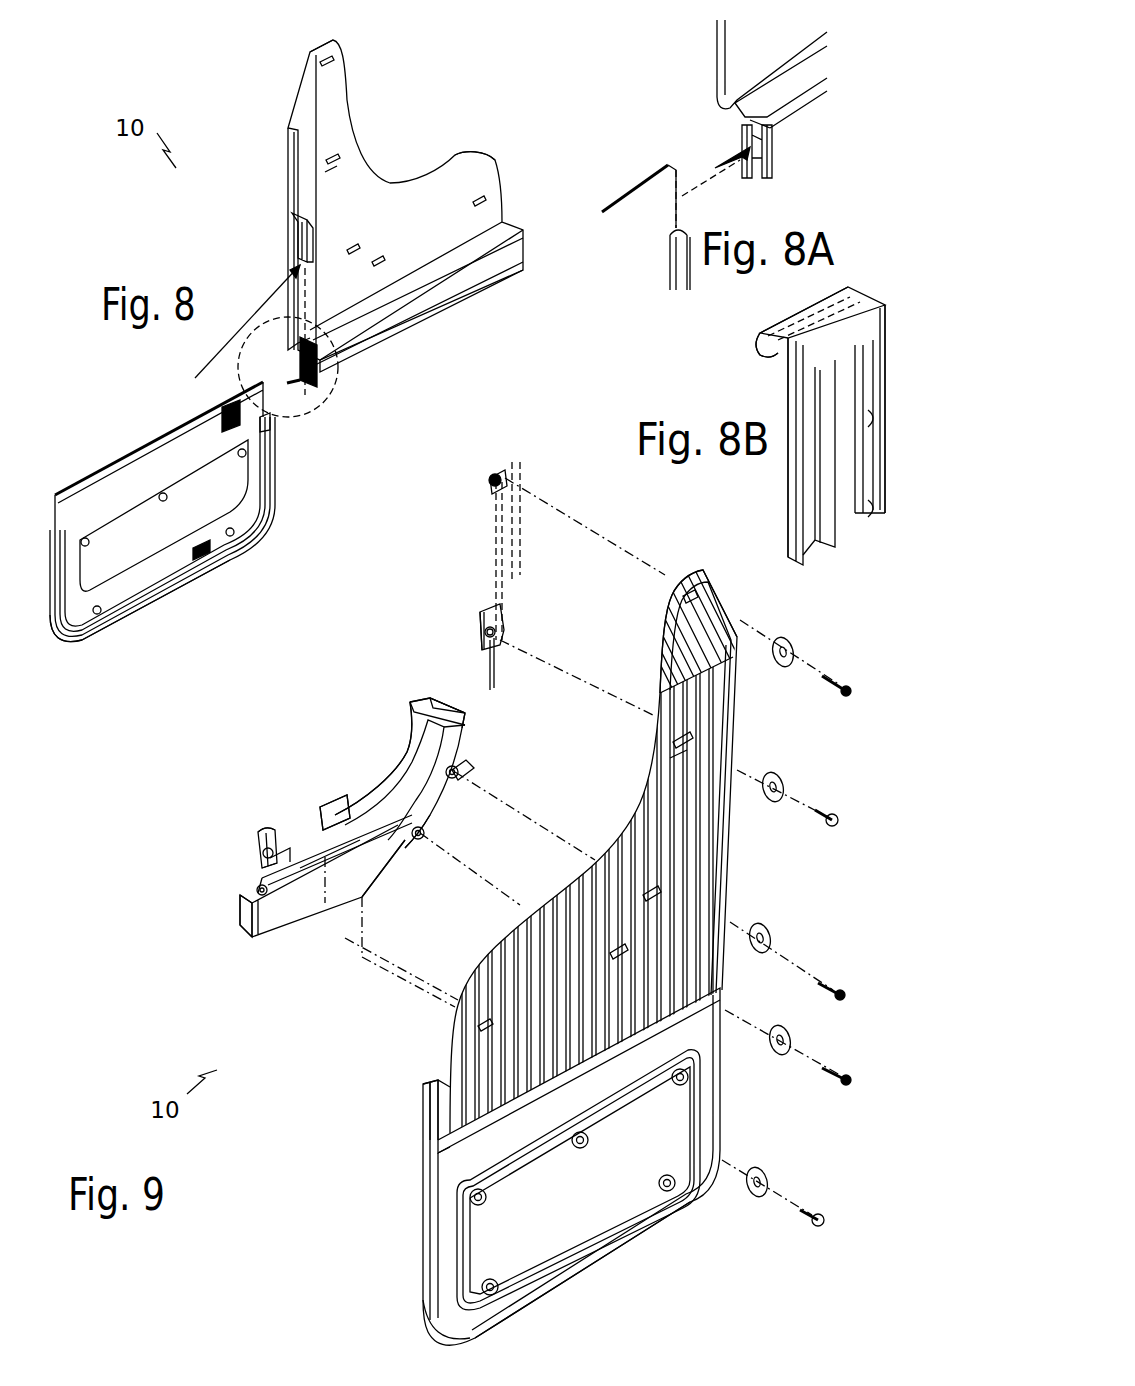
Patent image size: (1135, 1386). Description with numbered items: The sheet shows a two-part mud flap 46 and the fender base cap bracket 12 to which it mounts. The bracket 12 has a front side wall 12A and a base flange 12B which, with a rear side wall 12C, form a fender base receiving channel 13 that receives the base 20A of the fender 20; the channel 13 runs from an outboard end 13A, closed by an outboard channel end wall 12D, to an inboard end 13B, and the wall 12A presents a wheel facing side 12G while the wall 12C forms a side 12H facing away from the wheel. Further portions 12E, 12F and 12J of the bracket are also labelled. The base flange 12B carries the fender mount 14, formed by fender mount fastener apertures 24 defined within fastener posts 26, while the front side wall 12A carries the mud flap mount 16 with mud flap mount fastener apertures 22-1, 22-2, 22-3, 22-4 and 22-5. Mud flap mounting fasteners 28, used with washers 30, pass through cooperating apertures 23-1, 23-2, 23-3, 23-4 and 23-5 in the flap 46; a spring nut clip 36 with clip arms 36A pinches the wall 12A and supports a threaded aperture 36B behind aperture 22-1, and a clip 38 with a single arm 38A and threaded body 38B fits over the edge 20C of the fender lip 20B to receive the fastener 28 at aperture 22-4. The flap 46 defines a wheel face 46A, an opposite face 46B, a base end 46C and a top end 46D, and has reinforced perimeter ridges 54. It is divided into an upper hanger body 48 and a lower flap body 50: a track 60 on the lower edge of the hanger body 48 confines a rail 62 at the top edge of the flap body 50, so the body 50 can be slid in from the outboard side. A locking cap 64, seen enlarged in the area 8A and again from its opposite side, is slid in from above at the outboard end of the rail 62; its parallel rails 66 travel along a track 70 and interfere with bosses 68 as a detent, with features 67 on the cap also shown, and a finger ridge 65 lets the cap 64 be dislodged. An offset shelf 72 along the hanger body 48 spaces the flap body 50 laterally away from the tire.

In FIG. 9, the fender base cap bracket 12 is at (298, 922).
In FIG. 9, the front side wall 12A is at (367, 867).
In FIG. 9, the base flange 12B is at (468, 688).
In FIG. 9, the rear side wall 12C is at (388, 766).
In FIG. 9, the outboard channel end wall 12D is at (465, 745).
In FIG. 9, the bracket top tab edge 12E is at (470, 720).
In FIG. 9, the bracket end face 12F is at (240, 912).
In FIG. 9, the wheel facing side 12G is at (461, 807).
In FIG. 9, the side facing away from the wheel 12H is at (320, 810).
In FIG. 9, the bracket curved inner edge 12J is at (445, 705).
In FIG. 9, the fender base receiving channel 13 is at (420, 735).
In FIG. 9, the outboard end of the channel 13A is at (468, 712).
In FIG. 9, the inboard end of the channel 13B is at (246, 920).
In FIG. 9, the fender mount 14 is at (428, 846).
In FIG. 9, the mud flap mount 16 is at (318, 925).
In FIG. 9, the fender 20 is at (545, 545).
In FIG. 9, the fender base 20A is at (466, 752).
In FIG. 9, the fender lip 20B is at (494, 560).
In FIG. 9, the edge of the lip 20C is at (500, 600).
In FIG. 9, the mud flap mount fastener aperture 22-1 is at (258, 890).
In FIG. 9, the bracket mounting hole 22-2 is at (428, 837).
In FIG. 9, the bracket mounting hole 22-3 is at (460, 773).
In FIG. 9, the mud flap mount fastener aperture 22-4 is at (500, 618).
In FIG. 9, the mud flap mount fastener aperture 22-5 is at (502, 475).
In FIG. 8, the mud flap aperture 23-1 is at (488, 200).
In FIG. 9, the mud flap aperture 23-1 is at (480, 1024).
In FIG. 8, the mud flap slot 23-2 is at (385, 258).
In FIG. 9, the mud flap slot 23-2 is at (630, 948).
In FIG. 8, the mud flap slot 23-3 is at (360, 246).
In FIG. 9, the mud flap slot 23-3 is at (662, 892).
In FIG. 8, the mud flap aperture 23-4 is at (338, 152).
In FIG. 9, the mud flap aperture 23-4 is at (693, 736).
In FIG. 8, the mud flap aperture 23-5 is at (336, 60).
In FIG. 9, the mud flap aperture 23-5 is at (700, 594).
In FIG. 9, the fender mount fastener apertures 24 is at (360, 784).
In FIG. 9, the fastener posts 26 is at (366, 792).
In FIG. 9, the mud flap mounting fasteners 28 is at (852, 690).
In FIG. 9, the washers 30 is at (793, 652).
In FIG. 9, the spring nut clip 36 is at (267, 840).
In FIG. 9, the clip arms 36A is at (278, 858).
In FIG. 9, the threaded aperture 36B is at (260, 846).
In FIG. 9, the mud flap mounting clip 38 is at (478, 615).
In FIG. 9, the clip arm 38A is at (482, 630).
In FIG. 9, the threaded body 38B is at (500, 632).
In FIG. 9, the mud flap 46 is at (488, 1226).
In FIG. 8, the wheel face 46A is at (145, 436).
In FIG. 9, the wheel face 46A is at (705, 1032).
In FIG. 8, the face facing away from the wheel face 46B is at (452, 190).
In FIG. 9, the face facing away from the wheel face 46B is at (421, 1115).
In FIG. 8, the base end 46C is at (224, 578).
In FIG. 9, the base end 46C is at (507, 1327).
In FIG. 8, the top end 46D is at (322, 50).
In FIG. 9, the top end 46D is at (692, 584).
In FIG. 8, the upper hanger body 48 is at (330, 108).
In FIG. 8, the lower flap body 50 is at (150, 560).
In FIG. 9, the lower flap body 50 is at (688, 1210).
In FIG. 8, the reinforced perimeter ridges 54 is at (78, 642).
In FIG. 8, the track 60 is at (308, 388).
In FIG. 8A, the track 60 is at (752, 185).
In FIG. 8B, the track 60 is at (820, 426).
In FIG. 8, the rail 62 is at (85, 482).
In FIG. 8A, the rail 62 is at (632, 192).
In FIG. 8, the locking cap 64 is at (315, 262).
In FIG. 8B, the locking cap 64 is at (775, 330).
In FIG. 9, the locking cap 64 is at (430, 1118).
In FIG. 8B, the finger ridge 65 is at (828, 313).
In FIG. 8, the parallel rails 66 is at (310, 228).
In FIG. 8B, the parallel rails 66 is at (888, 395).
In FIG. 8B, the clip detent 67 is at (872, 422).
In FIG. 8A, the bosses 68 is at (775, 132).
In FIG. 8, the track 70 is at (225, 329).
In FIG. 8A, the track 70 is at (740, 142).
In FIG. 8, the offset shelf 72 is at (462, 262).
In FIG. 8, the dashed-line detail area 8A is at (340, 345).